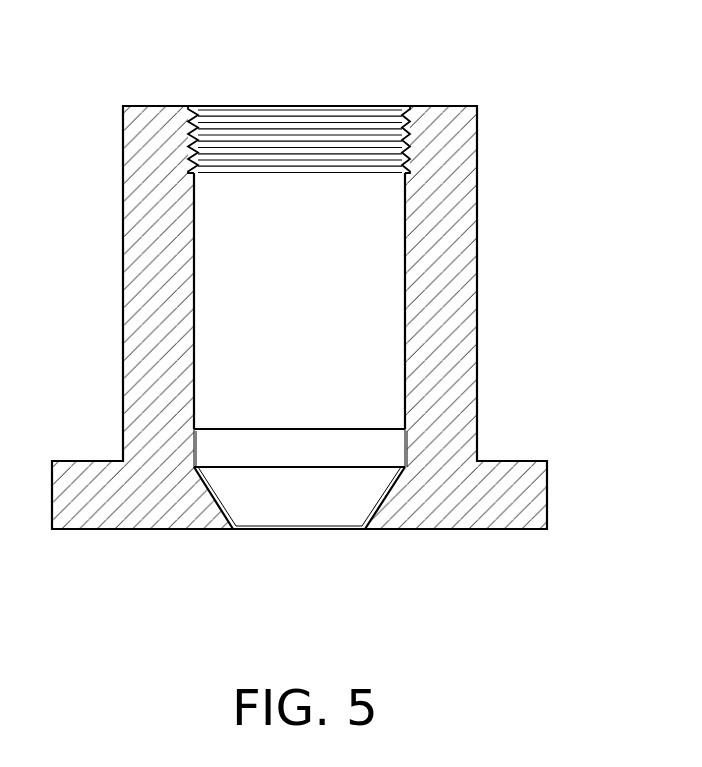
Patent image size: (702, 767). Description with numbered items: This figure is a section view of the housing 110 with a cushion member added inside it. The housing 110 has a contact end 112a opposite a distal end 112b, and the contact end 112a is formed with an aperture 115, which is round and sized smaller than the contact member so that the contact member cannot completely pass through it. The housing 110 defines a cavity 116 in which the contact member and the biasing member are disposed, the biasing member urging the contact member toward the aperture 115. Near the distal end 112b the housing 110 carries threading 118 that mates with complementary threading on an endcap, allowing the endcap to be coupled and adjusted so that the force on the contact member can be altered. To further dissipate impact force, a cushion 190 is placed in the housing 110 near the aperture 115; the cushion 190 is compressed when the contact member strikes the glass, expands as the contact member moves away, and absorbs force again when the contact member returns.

The housing 110 is at (458, 84).
The contact end 112a is at (487, 548).
The distal end 112b is at (147, 93).
The aperture 115 is at (305, 532).
The cavity 116 is at (250, 293).
The threading 118 is at (278, 138).
The cushion 190 is at (343, 445).